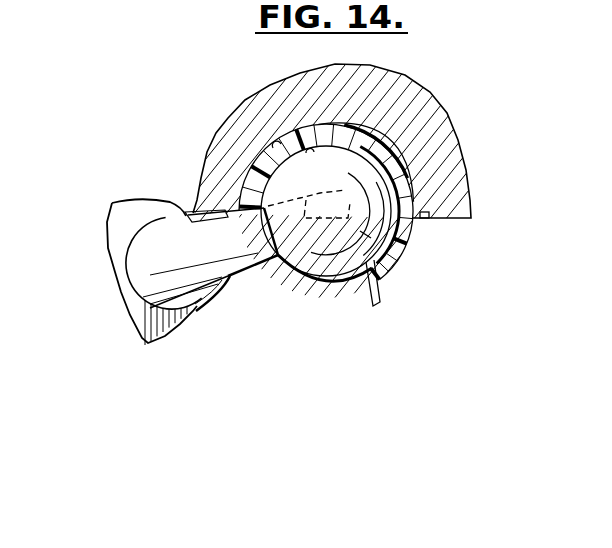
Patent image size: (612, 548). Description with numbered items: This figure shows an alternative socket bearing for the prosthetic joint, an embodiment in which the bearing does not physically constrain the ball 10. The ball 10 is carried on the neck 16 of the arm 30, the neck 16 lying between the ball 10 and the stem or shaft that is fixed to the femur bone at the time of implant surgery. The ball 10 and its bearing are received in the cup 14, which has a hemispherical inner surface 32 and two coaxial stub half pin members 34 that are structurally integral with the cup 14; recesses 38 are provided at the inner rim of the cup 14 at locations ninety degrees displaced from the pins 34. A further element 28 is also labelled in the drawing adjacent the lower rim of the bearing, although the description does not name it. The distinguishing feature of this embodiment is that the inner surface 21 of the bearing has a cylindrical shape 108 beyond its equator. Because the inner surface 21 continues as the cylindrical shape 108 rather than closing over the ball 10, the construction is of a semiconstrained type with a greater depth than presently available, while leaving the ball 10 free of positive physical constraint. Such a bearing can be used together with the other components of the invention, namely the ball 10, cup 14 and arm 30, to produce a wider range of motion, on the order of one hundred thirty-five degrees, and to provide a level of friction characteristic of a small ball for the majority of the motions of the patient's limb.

The ball 10 is at (319, 253).
The cup 14 is at (442, 103).
The neck 16 is at (210, 302).
The inner surface 21 is at (318, 138).
The retaining tab 28 is at (379, 300).
The arm 30 is at (100, 272).
The hemispherical inner surface 32 is at (272, 147).
The stub half pin members 34 is at (337, 197).
The recesses 38 is at (424, 219).
The cylindrical shape 108 is at (266, 210).